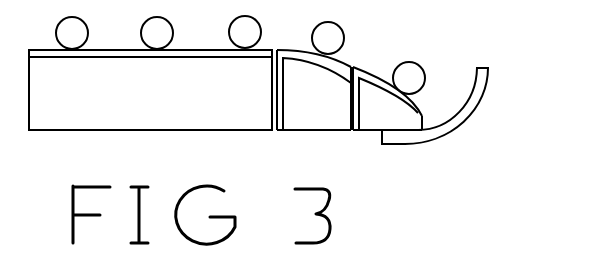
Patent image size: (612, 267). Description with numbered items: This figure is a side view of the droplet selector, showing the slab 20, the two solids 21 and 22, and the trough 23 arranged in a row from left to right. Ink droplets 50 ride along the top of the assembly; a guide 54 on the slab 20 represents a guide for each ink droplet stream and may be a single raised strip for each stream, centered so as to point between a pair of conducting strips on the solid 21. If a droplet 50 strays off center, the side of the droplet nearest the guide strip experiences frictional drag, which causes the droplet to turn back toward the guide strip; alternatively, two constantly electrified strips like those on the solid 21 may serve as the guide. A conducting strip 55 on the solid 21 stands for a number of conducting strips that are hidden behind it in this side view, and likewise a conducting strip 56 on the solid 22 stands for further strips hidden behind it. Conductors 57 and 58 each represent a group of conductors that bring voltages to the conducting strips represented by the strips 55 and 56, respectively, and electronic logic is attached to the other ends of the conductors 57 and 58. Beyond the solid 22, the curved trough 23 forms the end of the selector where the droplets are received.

The slab 20 is at (150, 90).
The solid 21 is at (314, 94).
The solid 22 is at (387, 98).
The trough 23 is at (463, 117).
The droplet 50 is at (238, 27).
The guide 54 is at (114, 54).
The conducting strip 55 is at (302, 55).
The conducting strip 56 is at (373, 70).
The conductor 57 is at (281, 78).
The conductor 58 is at (351, 87).